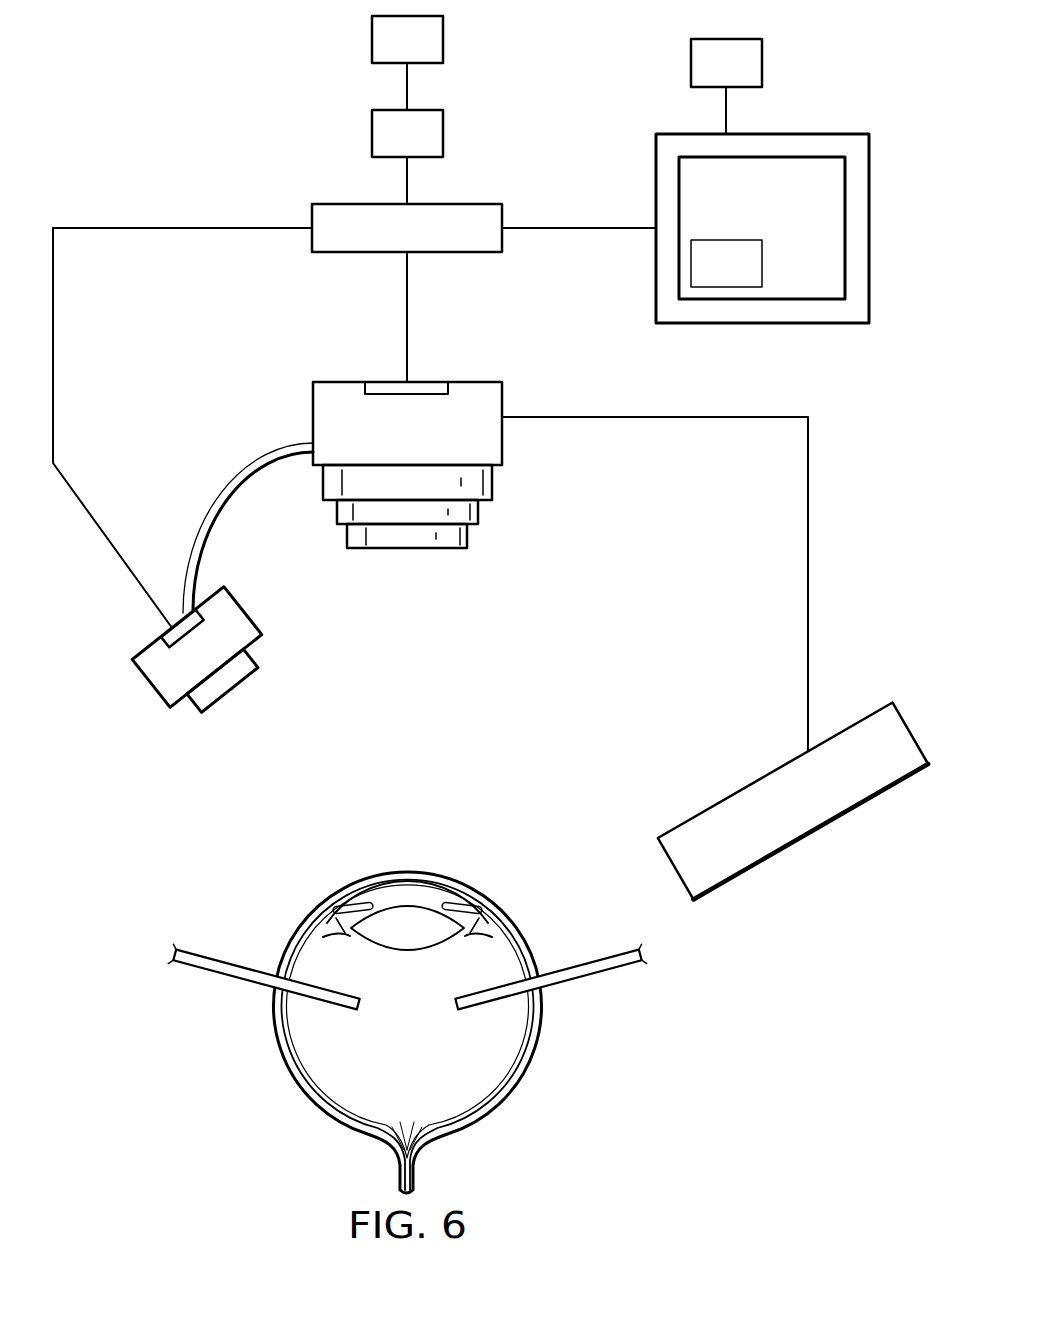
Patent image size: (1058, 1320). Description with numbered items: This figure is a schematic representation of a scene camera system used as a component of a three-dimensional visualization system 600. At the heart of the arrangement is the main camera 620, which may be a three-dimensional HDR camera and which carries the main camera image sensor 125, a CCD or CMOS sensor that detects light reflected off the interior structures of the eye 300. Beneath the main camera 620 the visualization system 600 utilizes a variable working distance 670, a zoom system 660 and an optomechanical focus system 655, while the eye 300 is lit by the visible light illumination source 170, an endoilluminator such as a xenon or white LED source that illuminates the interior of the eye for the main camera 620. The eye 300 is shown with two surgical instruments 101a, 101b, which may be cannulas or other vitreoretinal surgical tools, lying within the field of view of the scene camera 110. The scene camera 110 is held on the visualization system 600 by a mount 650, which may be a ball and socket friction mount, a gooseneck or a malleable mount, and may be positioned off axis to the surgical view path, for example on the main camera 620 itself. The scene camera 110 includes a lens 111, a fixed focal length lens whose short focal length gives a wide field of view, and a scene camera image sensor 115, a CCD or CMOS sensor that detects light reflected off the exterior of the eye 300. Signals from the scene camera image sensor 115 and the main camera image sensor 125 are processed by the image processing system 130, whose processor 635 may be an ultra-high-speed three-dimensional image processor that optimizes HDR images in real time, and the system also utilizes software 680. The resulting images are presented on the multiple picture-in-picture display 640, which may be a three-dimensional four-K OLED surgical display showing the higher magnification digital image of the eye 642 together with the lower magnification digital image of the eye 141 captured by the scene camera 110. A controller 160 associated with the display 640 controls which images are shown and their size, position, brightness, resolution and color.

The software 680 is at (370, 38).
The processor 635 is at (370, 132).
The image processing system 130 is at (465, 203).
The controller 160 is at (690, 63).
The multiple picture-in-picture display 640 is at (826, 126).
The higher magnification digital image of the eye 642 is at (833, 184).
The lower magnification digital image of the eye 141 is at (726, 240).
The main camera 620 is at (313, 404).
The main camera image sensor 125 is at (385, 383).
The variable working distance 670 is at (493, 482).
The zoom system 660 is at (337, 511).
The optomechanical focus system 655 is at (468, 533).
The mount 650 is at (204, 510).
The scene camera 110 is at (152, 684).
The lens 111 is at (255, 655).
The scene camera image sensor 115 is at (164, 640).
The visible light illumination source 170 is at (812, 832).
The eye 300 is at (268, 1017).
The surgical instrument 101a is at (224, 960).
The surgical instrument 101b is at (587, 960).
The visualization system 600 is at (139, 805).